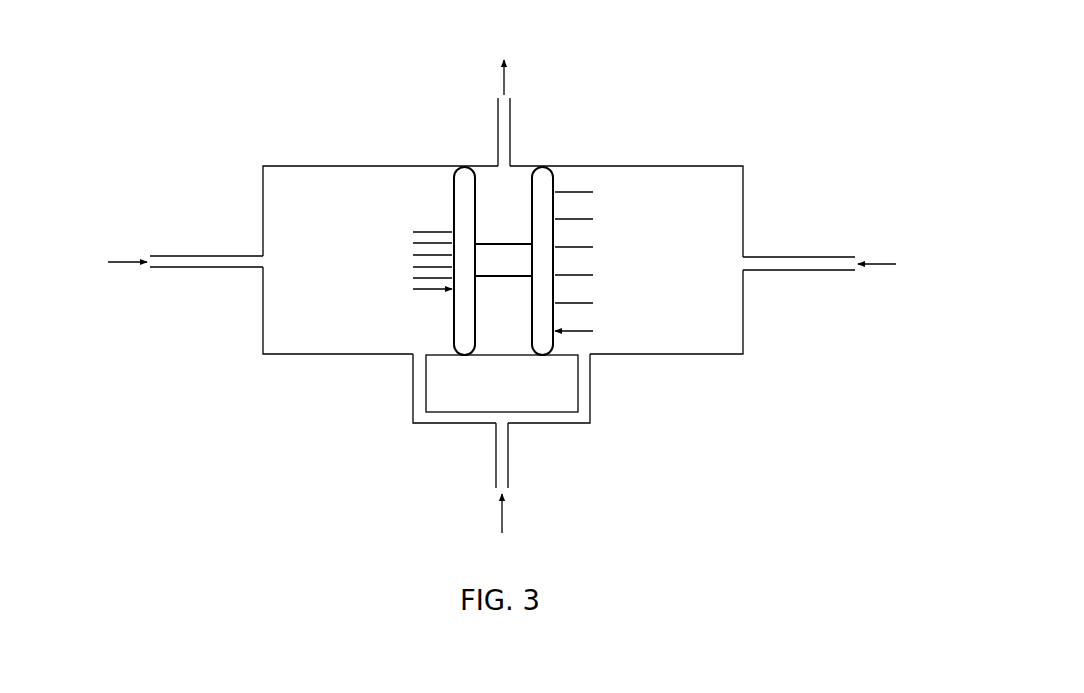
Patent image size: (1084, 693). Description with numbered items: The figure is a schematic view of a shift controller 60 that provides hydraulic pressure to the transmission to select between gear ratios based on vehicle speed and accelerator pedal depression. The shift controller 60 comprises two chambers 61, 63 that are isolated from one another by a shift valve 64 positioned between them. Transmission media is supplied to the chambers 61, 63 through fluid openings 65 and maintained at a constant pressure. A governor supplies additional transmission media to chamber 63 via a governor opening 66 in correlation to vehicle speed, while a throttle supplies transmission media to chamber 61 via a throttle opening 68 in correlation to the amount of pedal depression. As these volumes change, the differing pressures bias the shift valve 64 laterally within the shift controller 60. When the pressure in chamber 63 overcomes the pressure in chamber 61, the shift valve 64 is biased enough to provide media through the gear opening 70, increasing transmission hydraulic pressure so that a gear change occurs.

The shift controller 60 is at (258, 96).
The chamber 61 is at (366, 268).
The chamber 63 is at (676, 270).
The shift valve 64 is at (467, 261).
The fluid openings 65 is at (417, 357).
The governor opening 66 is at (745, 260).
The throttle opening 68 is at (263, 260).
The gear opening 70 is at (510, 165).